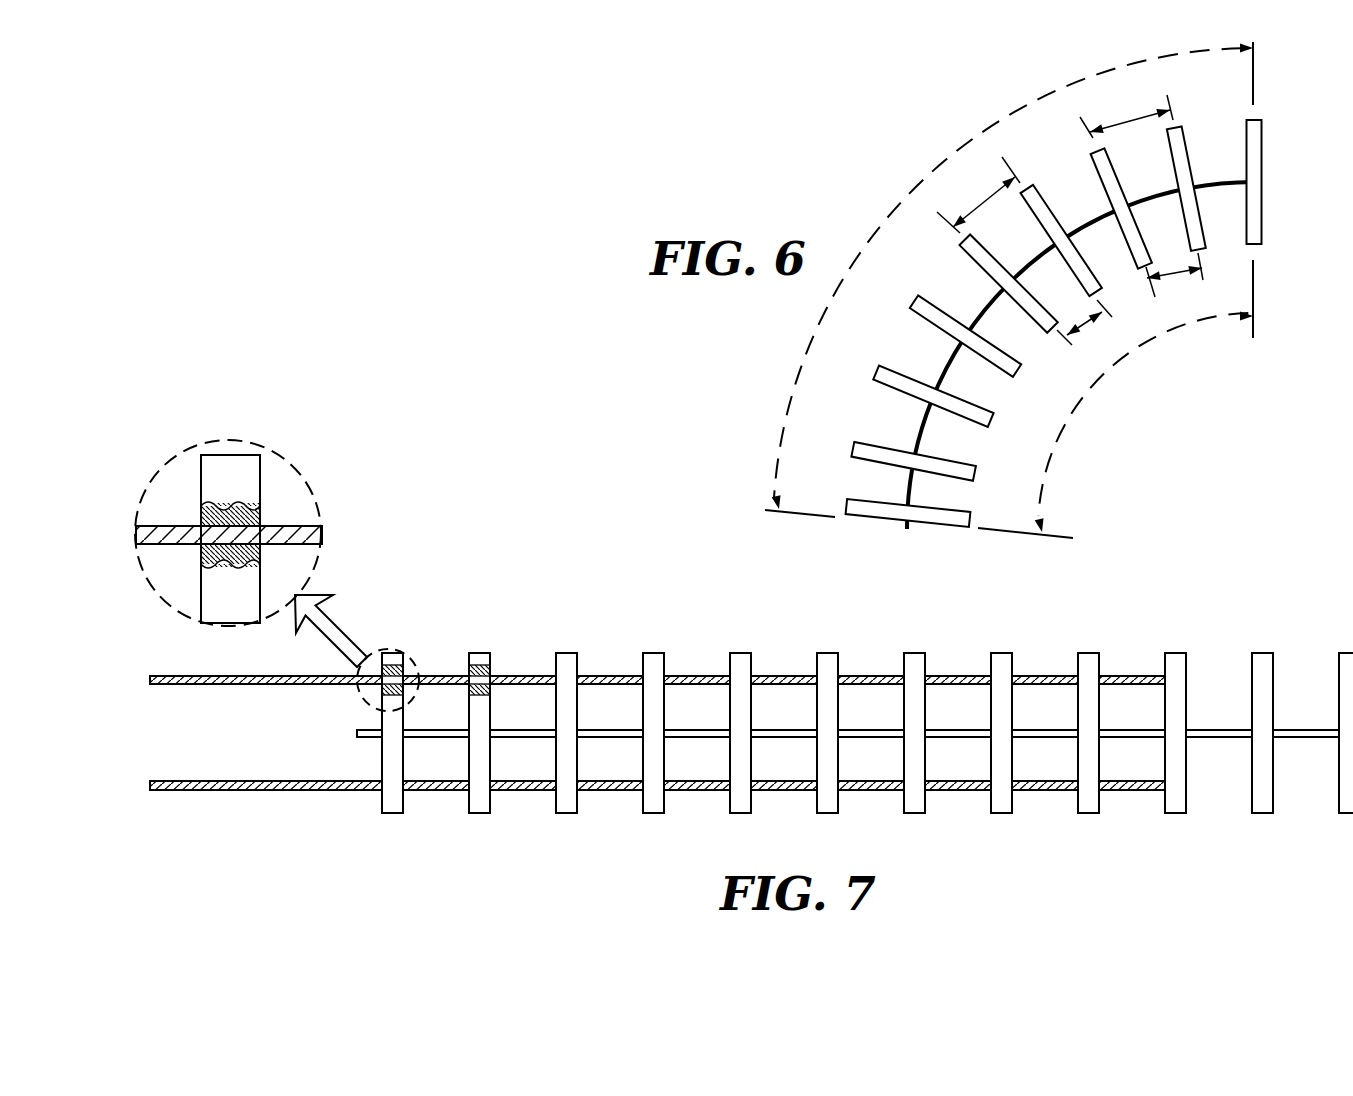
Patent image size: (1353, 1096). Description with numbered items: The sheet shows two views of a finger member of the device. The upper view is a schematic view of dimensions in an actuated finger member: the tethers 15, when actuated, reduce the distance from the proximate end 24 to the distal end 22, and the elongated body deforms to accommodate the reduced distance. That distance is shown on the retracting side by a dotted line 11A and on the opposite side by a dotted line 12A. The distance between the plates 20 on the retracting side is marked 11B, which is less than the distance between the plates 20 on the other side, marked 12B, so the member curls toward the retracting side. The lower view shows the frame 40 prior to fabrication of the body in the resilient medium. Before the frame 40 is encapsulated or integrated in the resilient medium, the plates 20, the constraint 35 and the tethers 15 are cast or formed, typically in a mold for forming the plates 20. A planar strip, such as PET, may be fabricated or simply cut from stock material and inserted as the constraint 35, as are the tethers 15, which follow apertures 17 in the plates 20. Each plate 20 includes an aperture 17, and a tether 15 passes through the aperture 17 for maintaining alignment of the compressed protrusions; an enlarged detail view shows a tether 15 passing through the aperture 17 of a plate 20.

In FIG. 6, the dotted line 11A is at (1125, 358).
In FIG. 6, the distance between the plates on the retracting side 11B is at (1130, 305).
In FIG. 6, the dotted line 12A is at (878, 228).
In FIG. 6, the distance between the plates on the other side 12B is at (1055, 161).
In FIG. 7, the tether 15 is at (237, 685).
In FIG. 7, the aperture 17 is at (265, 520).
In FIG. 6, the plate 20 is at (1100, 183).
In FIG. 7, the plate 20 is at (730, 658).
In FIG. 6, the distal end 22 is at (1260, 102).
In FIG. 6, the proximate end 24 is at (845, 535).
In FIG. 6, the constraint 35 is at (1212, 175).
In FIG. 7, the constraint 35 is at (365, 732).
In FIG. 7, the frame 40 is at (744, 656).